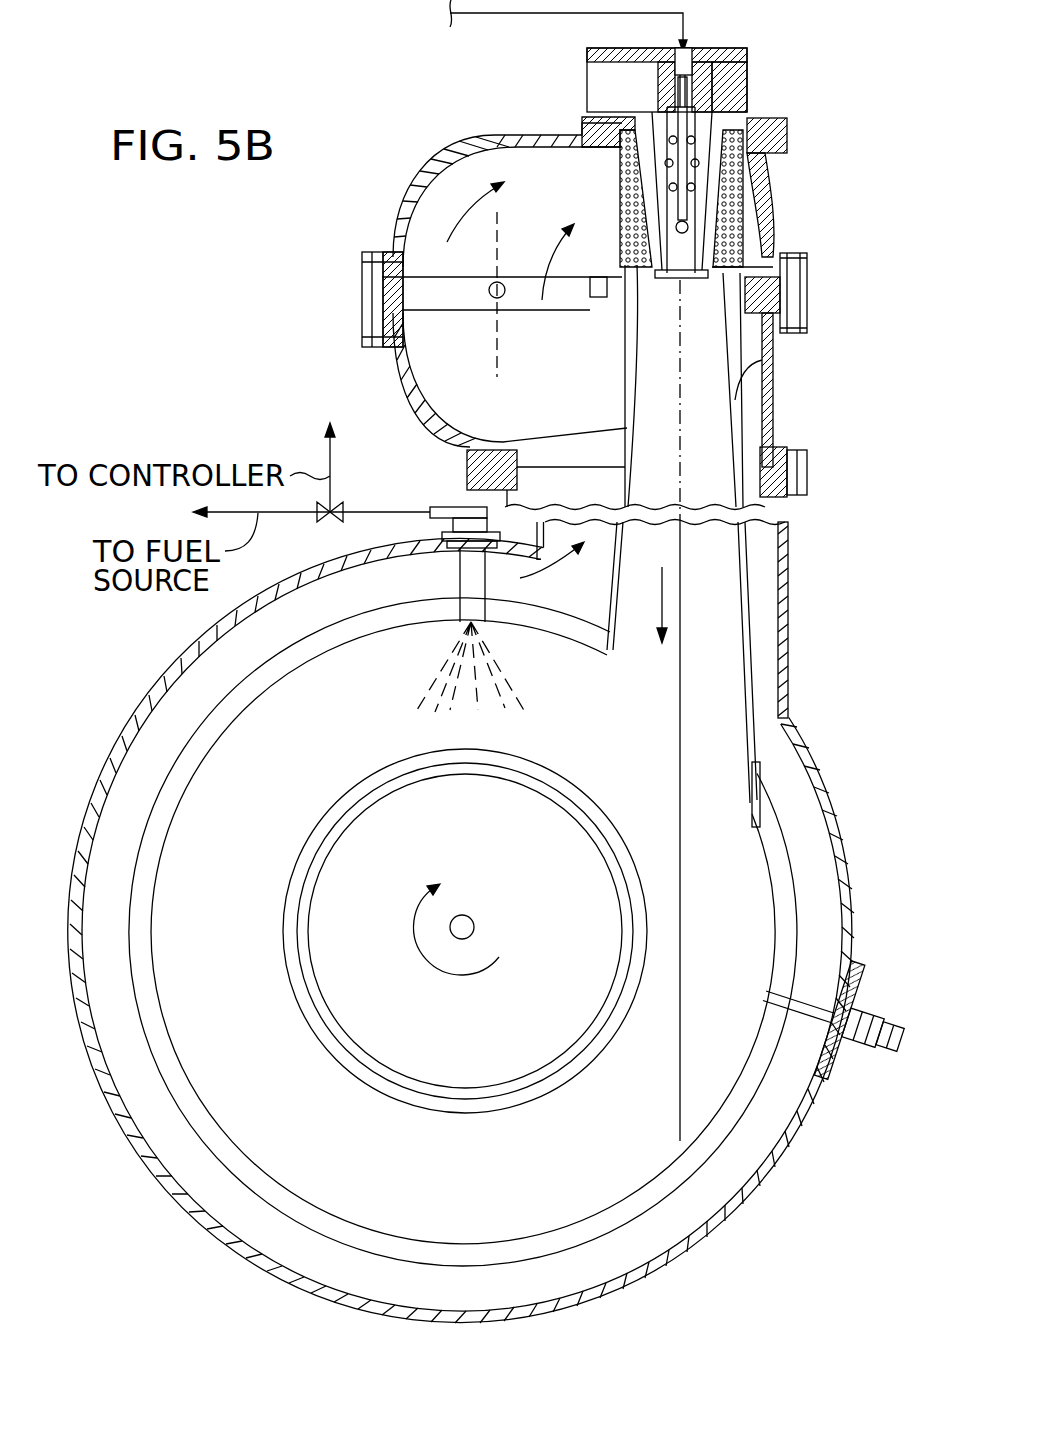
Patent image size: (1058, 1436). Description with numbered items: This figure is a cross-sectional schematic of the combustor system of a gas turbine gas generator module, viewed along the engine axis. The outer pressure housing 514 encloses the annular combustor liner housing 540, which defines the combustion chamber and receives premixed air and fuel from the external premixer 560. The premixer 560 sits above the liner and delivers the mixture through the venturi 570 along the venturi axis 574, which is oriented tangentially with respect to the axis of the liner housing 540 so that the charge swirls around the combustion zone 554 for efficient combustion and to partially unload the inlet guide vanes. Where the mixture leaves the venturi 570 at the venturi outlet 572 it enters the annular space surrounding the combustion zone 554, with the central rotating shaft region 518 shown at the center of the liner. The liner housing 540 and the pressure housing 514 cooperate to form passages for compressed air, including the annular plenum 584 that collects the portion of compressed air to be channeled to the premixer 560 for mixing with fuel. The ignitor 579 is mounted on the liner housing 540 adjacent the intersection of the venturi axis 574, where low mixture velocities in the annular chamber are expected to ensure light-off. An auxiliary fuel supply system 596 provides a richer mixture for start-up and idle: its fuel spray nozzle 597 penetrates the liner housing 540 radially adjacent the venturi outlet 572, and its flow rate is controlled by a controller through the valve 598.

The pressure housing 514 is at (740, 1212).
The rotor shaft hub 518 is at (467, 921).
The combustor liner housing 540 is at (735, 1130).
The combustion zone 554 is at (283, 801).
The external premixer 560 is at (638, 383).
The venturi 570 is at (738, 250).
The venturi outlet 572 is at (655, 672).
The venturi axis 574 is at (680, 595).
The ignitor 579 is at (880, 1000).
The annular plenum 584 is at (437, 594).
The auxiliary fuel supply system 596 is at (367, 408).
The fuel spray nozzle 597 is at (458, 640).
The valve 598 is at (345, 502).